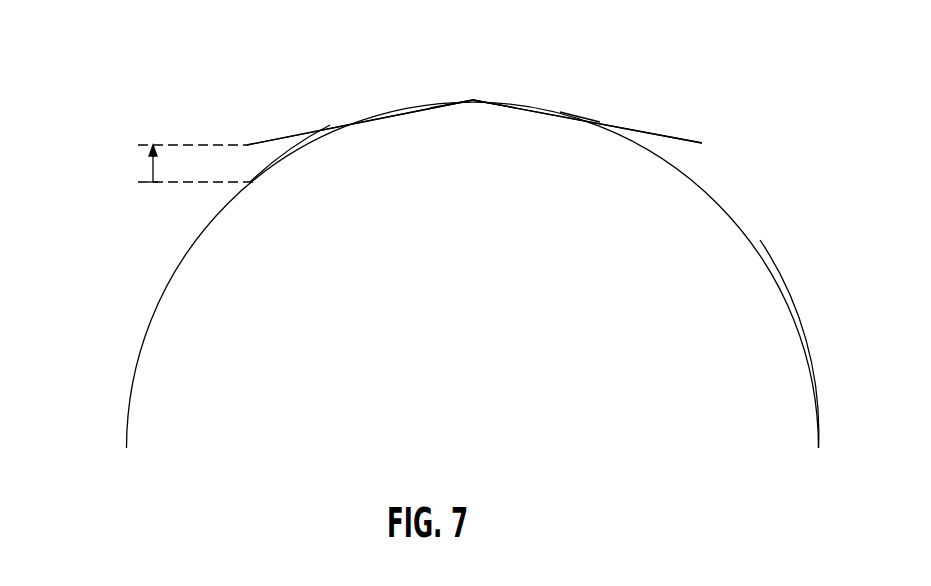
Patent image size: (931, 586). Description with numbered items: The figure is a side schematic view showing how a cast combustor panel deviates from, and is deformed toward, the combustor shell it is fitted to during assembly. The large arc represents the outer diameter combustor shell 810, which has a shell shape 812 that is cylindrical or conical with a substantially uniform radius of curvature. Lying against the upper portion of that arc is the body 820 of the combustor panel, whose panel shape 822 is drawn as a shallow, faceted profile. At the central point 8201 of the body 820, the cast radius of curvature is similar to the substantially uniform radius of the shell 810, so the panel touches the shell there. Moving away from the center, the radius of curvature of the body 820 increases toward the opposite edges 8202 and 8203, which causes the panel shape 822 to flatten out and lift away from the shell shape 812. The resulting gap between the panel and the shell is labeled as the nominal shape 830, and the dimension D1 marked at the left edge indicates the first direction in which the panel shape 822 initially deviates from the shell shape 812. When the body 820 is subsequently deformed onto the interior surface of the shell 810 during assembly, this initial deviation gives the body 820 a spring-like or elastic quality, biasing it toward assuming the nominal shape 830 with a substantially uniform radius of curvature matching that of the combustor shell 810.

The outer diameter combustor shell 810 is at (795, 322).
The shell shape 812 is at (813, 400).
The body 820 is at (643, 127).
The central point 8201 is at (473, 98).
The opposite edge 8202 is at (247, 145).
The opposite edge 8203 is at (702, 143).
The panel shape 822 is at (583, 111).
The nominal shape 830 is at (308, 142).
The first direction D1 is at (150, 170).